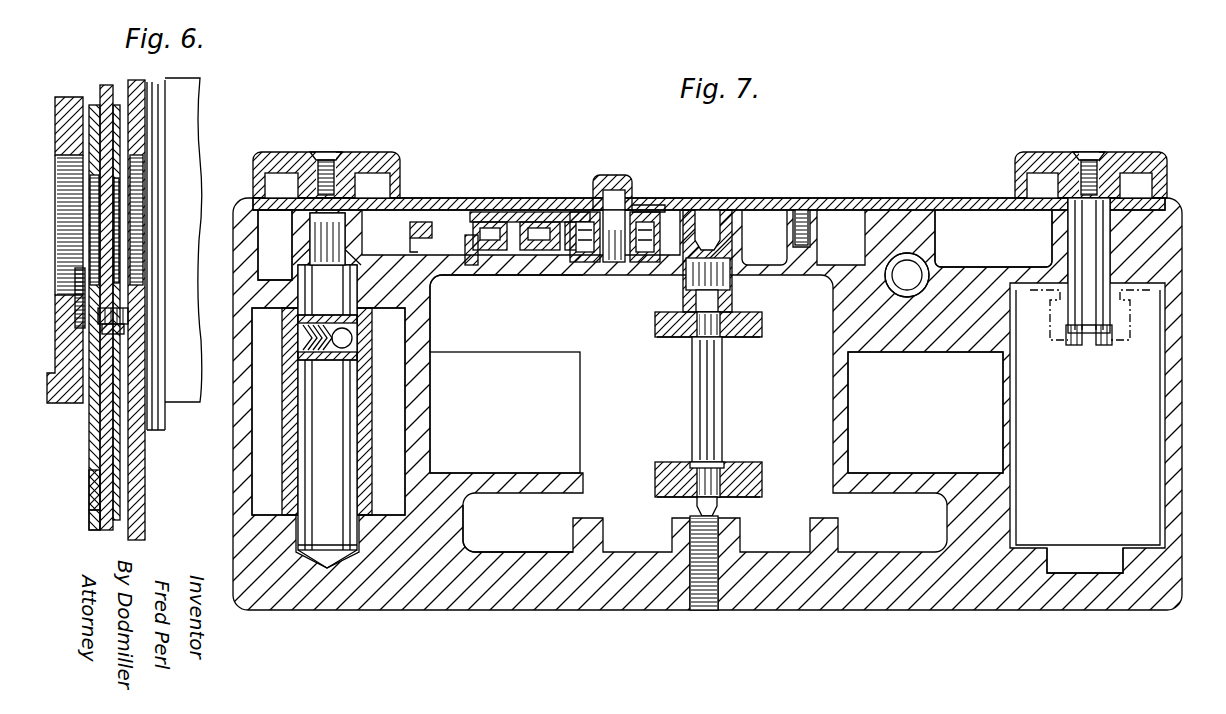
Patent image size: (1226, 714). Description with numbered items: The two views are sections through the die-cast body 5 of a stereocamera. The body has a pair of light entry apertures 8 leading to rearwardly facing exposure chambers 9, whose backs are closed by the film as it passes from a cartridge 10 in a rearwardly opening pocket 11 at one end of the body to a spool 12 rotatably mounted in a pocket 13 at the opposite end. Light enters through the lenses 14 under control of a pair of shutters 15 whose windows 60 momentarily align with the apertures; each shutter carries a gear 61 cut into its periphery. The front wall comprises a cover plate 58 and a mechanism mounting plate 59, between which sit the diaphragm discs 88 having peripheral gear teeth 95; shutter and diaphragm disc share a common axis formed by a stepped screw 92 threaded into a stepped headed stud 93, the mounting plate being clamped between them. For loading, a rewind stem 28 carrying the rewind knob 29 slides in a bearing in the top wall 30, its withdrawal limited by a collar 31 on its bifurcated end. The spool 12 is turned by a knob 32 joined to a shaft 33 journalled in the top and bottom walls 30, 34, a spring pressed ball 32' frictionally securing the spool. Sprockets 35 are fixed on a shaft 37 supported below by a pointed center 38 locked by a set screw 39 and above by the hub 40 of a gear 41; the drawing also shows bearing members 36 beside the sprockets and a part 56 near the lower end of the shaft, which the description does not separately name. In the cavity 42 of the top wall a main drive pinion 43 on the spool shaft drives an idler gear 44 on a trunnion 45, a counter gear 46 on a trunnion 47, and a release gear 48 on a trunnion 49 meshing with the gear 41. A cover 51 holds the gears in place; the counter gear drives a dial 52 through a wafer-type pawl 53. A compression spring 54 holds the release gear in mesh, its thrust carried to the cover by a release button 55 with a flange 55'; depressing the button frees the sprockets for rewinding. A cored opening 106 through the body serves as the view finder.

In FIG. 7, the body of stereocamera 5 is at (814, 155).
In FIG. 6, the light entry apertures 8 is at (76, 231).
In FIG. 7, the exposure chambers 9 is at (509, 421).
In FIG. 7, the cartridge 10 is at (1122, 302).
In FIG. 7, the pocket 11 is at (1150, 492).
In FIG. 7, the spool 12 is at (286, 382).
In FIG. 7, the pocket 13 is at (277, 429).
In FIG. 6, the lenses 14 is at (193, 421).
In FIG. 6, the shutters 15 is at (90, 489).
In FIG. 7, the rewind stem 28 is at (1075, 312).
In FIG. 7, the rewind knob 29 is at (1165, 155).
In FIG. 7, the top wall 30 is at (994, 250).
In FIG. 7, the collar 31 is at (1066, 340).
In FIG. 7, the knob 32 is at (335, 193).
In FIG. 7, the spring pressed ball 32' is at (352, 337).
In FIG. 7, the shaft 33 is at (340, 409).
In FIG. 7, the bottom wall 34 is at (506, 545).
In FIG. 7, the sprockets 35 is at (662, 340).
In FIG. 7, the bearing plate 36 is at (762, 320).
In FIG. 7, the shaft 37 is at (722, 396).
In FIG. 7, the pointed center 38 is at (718, 506).
In FIG. 7, the set screw 39 is at (712, 612).
In FIG. 7, the hub 40 is at (690, 300).
In FIG. 7, the gear 41 is at (758, 210).
In FIG. 7, the cavity 42 is at (955, 246).
In FIG. 7, the main drive pinion 43 is at (288, 248).
In FIG. 7, the idler gear 44 is at (445, 222).
In FIG. 7, the trunnion 45 is at (443, 262).
In FIG. 7, the counter gear 46 is at (472, 212).
In FIG. 7, the trunnion 47 is at (510, 260).
In FIG. 7, the release gear 48 is at (578, 212).
In FIG. 7, the trunnion 49 is at (614, 262).
In FIG. 7, the cover 51 is at (904, 198).
In FIG. 7, the dial 52 is at (500, 212).
In FIG. 7, the wafer-type pawl 53 is at (545, 212).
In FIG. 7, the compression spring 54 is at (565, 262).
In FIG. 7, the release button 55 is at (615, 178).
In FIG. 7, the flange 55' is at (655, 189).
In FIG. 7, the washer 56 is at (683, 468).
In FIG. 6, the cover plate 58 is at (145, 468).
In FIG. 6, the mechanism mounting plate 59 is at (92, 419).
In FIG. 6, the windows 60 is at (92, 448).
In FIG. 6, the gear 61 is at (94, 100).
In FIG. 6, the diaphragm discs 88 is at (135, 490).
In FIG. 6, the screw 92 is at (80, 268).
In FIG. 6, the headed stud 93 is at (128, 300).
In FIG. 6, the gear teeth 95 is at (116, 88).
In FIG. 7, the cored opening 106 is at (898, 258).